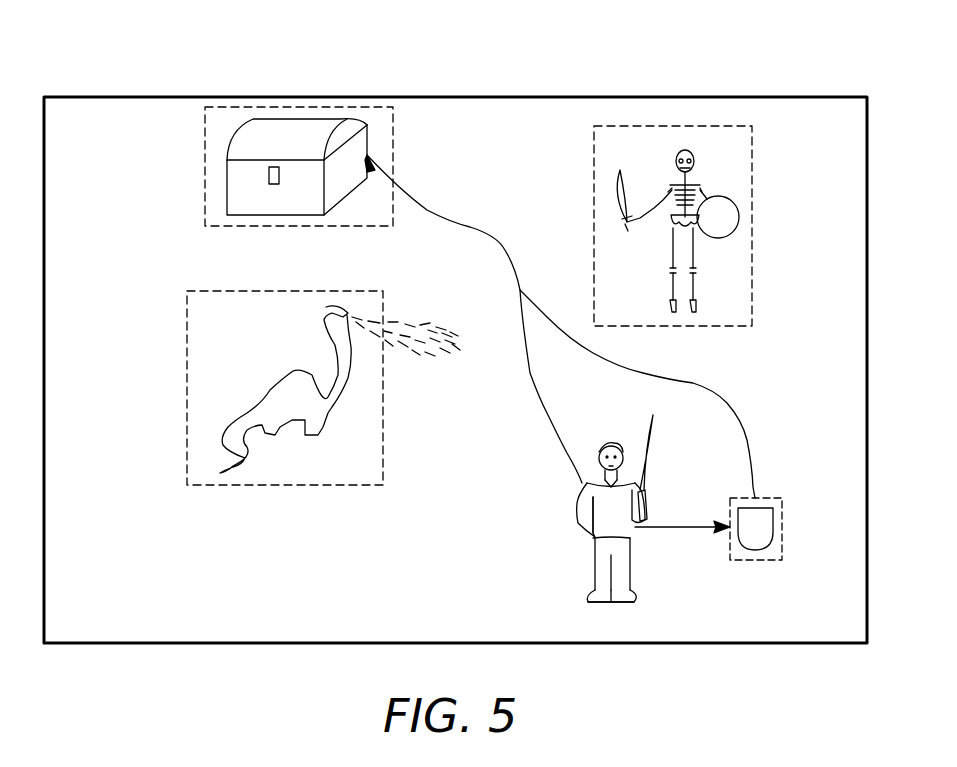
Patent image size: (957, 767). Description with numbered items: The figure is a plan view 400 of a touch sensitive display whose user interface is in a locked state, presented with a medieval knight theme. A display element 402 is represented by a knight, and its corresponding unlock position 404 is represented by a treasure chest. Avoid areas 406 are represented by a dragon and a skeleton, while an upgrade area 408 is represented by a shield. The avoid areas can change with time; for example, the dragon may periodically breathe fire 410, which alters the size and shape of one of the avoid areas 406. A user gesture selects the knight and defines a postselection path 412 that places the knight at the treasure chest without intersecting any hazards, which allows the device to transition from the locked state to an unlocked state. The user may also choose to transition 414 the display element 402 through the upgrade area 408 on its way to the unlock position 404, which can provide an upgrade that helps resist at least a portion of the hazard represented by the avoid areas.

The plan view 400 is at (797, 72).
The display element 402 is at (593, 566).
The unlock position 404 is at (205, 173).
The avoid areas 406 is at (752, 276).
The upgrade area 408 is at (757, 562).
The fire 410 is at (437, 357).
The postselection path 412 is at (473, 222).
The transition 414 is at (682, 530).